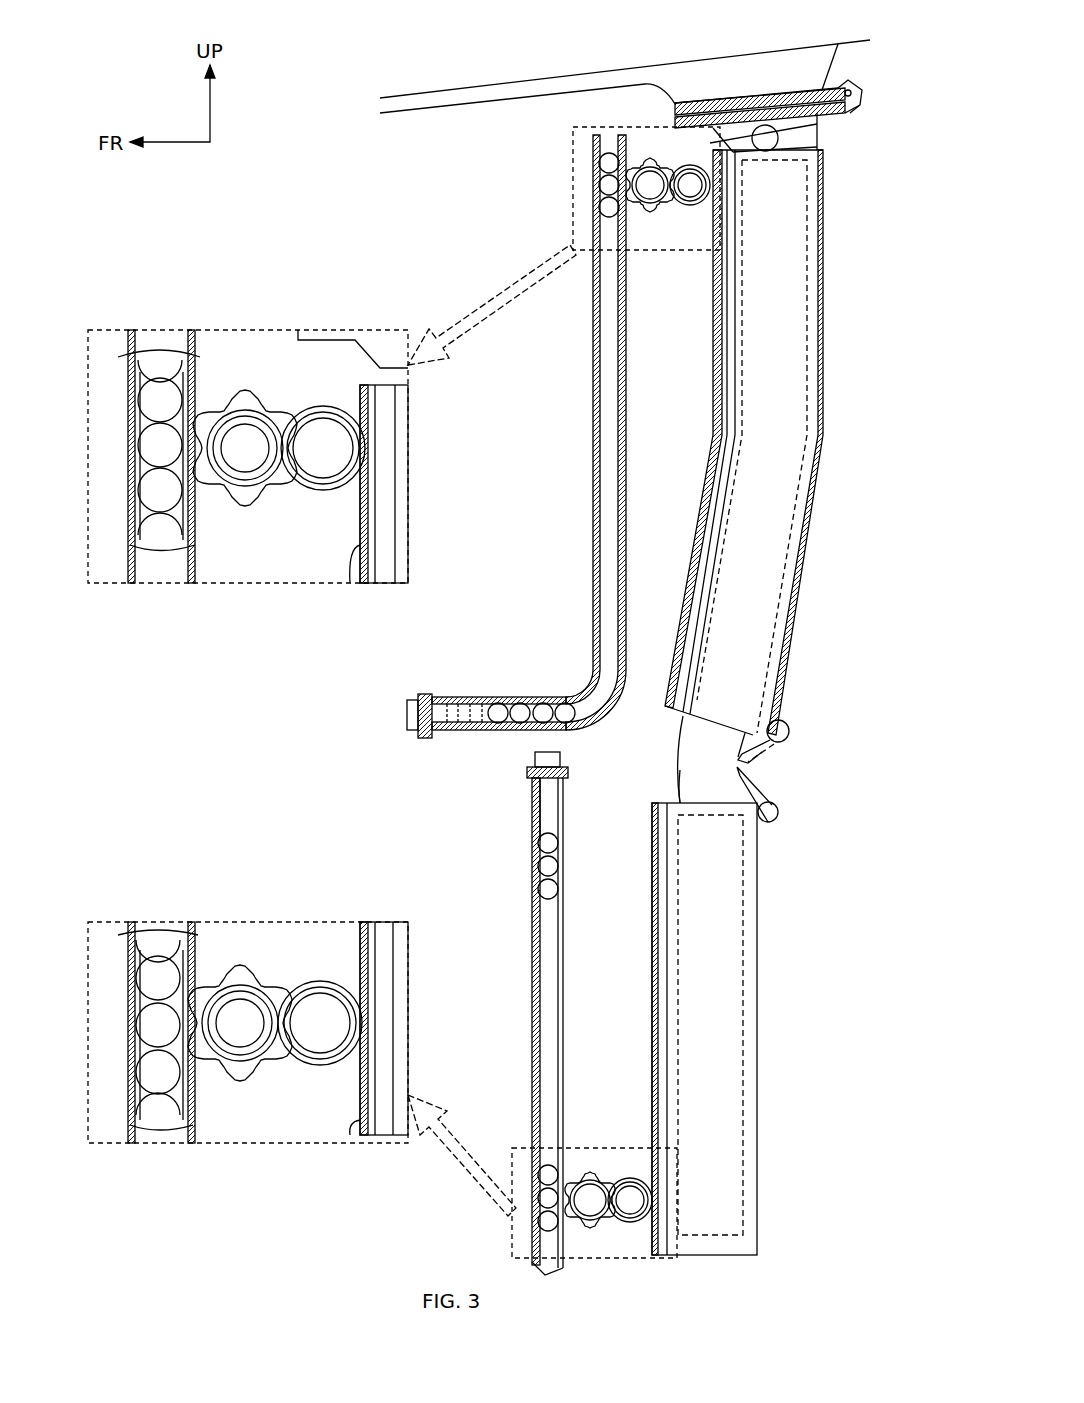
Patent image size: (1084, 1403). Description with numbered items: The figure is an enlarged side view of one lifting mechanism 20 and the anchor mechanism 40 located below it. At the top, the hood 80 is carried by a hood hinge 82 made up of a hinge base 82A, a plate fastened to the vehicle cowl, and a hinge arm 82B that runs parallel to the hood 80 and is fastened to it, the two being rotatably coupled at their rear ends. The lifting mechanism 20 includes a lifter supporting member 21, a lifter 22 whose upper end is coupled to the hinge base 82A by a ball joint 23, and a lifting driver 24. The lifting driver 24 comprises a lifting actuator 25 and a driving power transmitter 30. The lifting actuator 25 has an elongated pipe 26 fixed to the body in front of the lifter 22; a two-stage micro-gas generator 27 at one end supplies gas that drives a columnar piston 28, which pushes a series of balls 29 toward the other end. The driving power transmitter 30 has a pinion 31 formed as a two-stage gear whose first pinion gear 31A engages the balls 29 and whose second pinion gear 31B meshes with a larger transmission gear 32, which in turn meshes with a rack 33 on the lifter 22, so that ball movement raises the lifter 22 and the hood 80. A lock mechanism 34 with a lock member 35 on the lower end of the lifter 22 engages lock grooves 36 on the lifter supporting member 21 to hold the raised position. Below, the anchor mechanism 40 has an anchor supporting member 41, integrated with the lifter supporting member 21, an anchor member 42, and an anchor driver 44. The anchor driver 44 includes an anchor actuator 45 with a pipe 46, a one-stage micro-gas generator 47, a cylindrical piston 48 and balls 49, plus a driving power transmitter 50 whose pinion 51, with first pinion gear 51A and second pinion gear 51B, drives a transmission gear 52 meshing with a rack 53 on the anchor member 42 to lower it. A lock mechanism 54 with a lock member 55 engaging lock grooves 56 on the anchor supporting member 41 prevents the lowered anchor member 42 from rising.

The lifting mechanism 20 is at (485, 638).
The lifter supporting member 21 is at (683, 735).
The lifter 22 is at (823, 408).
The ball joint 23 is at (822, 138).
The lifting driver 24 is at (521, 403).
The lifting actuator 25 is at (474, 470).
The pipe 26 is at (593, 405).
The micro-gas generator 27 is at (407, 715).
The piston 28 is at (478, 718).
The balls 29 is at (160, 398).
The driving power transmitter 30 is at (655, 140).
The pinion 31 is at (253, 454).
The first pinion gear 31A is at (220, 500).
The second pinion gear 31B is at (255, 500).
The transmission gear 32 is at (317, 440).
The rack 33 is at (365, 548).
The lock mechanism 34 is at (820, 734).
The lock member 35 is at (771, 748).
The lock grooves 36 is at (808, 232).
The anchor mechanism 40 is at (481, 989).
The anchor supporting member 41 is at (677, 787).
The anchor member 42 is at (757, 975).
The anchor driver 44 is at (524, 1013).
The anchor actuator 45 is at (510, 1013).
The pipe 46 is at (532, 1020).
The micro-gas generator 47 is at (568, 771).
The piston 48 is at (488, 809).
The balls 49 is at (558, 843).
The driving power transmitter 50 is at (613, 1158).
The pinion 51 is at (251, 1027).
The first pinion gear 51A is at (220, 1078).
The second pinion gear 51B is at (260, 1075).
The transmission gear 52 is at (318, 1010).
The rack 53 is at (365, 1128).
The lock mechanism 54 is at (780, 1001).
The lock member 55 is at (768, 822).
The lock grooves 56 is at (774, 840).
The hood 80 is at (400, 96).
The hood hinge 82 is at (863, 98).
The hinge base 82A is at (850, 116).
The hinge arm 82B is at (813, 90).